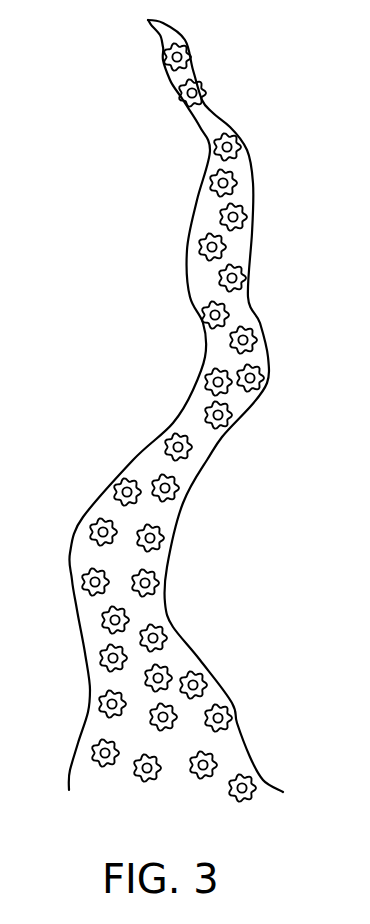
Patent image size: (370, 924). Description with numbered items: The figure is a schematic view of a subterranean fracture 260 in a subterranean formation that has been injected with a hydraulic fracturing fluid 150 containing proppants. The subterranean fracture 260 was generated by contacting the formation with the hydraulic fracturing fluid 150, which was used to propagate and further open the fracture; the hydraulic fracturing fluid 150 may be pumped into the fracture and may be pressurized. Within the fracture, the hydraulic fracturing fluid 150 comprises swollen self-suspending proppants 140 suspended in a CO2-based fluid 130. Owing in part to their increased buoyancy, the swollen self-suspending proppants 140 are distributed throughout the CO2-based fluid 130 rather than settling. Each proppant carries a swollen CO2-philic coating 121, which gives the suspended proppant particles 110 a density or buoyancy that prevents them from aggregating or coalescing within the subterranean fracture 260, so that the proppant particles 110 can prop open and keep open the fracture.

The proppant particles 110 is at (90, 531).
The swollen CO2-philic coating 121 is at (233, 721).
The CO2-based fluid 130 is at (140, 515).
The swollen self-suspending proppants 140 is at (124, 481).
The hydraulic fracturing fluid 150 is at (103, 781).
The subterranean fracture 260 is at (196, 64).